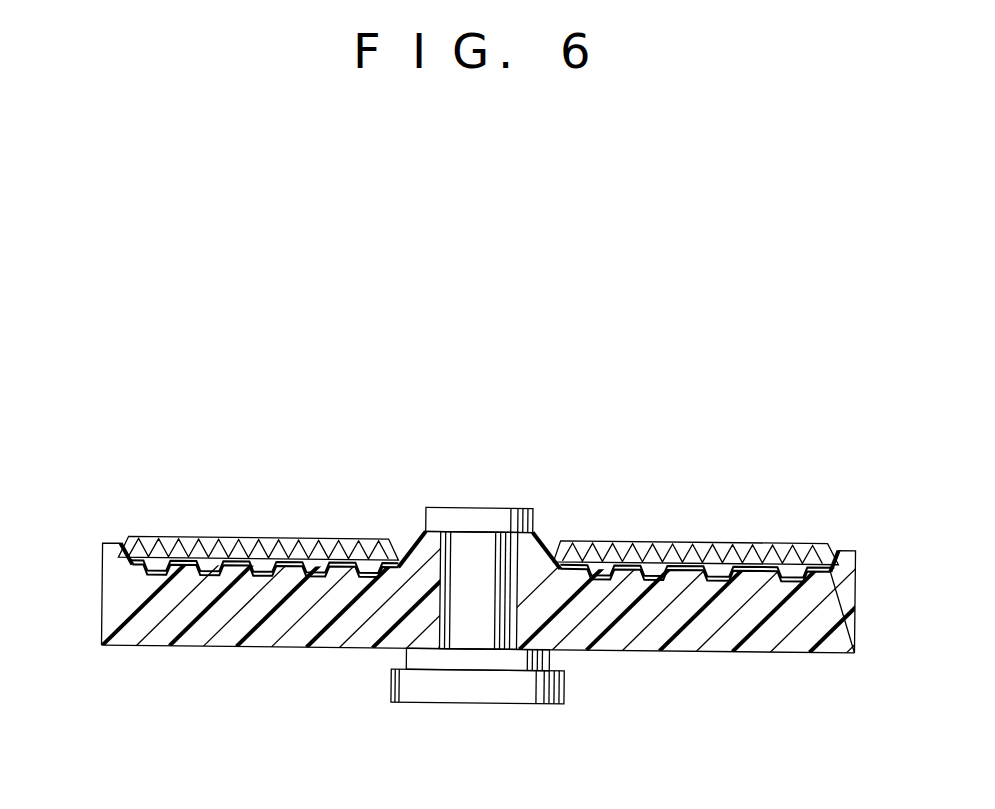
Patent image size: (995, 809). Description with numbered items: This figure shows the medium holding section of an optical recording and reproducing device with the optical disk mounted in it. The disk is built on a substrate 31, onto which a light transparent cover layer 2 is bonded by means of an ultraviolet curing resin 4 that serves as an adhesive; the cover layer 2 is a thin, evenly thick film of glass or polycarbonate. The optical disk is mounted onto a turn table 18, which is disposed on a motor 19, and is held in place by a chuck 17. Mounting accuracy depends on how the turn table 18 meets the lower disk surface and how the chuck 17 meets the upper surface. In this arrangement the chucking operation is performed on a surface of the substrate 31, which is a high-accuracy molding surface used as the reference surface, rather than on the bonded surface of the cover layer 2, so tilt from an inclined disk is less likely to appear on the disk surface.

The light transparent cover layer 2 is at (163, 546).
The ultraviolet curing resin 4 is at (648, 565).
The chuck 17 is at (450, 520).
The turn table 18 is at (477, 565).
The motor 19 is at (492, 687).
The substrate 31 is at (130, 620).